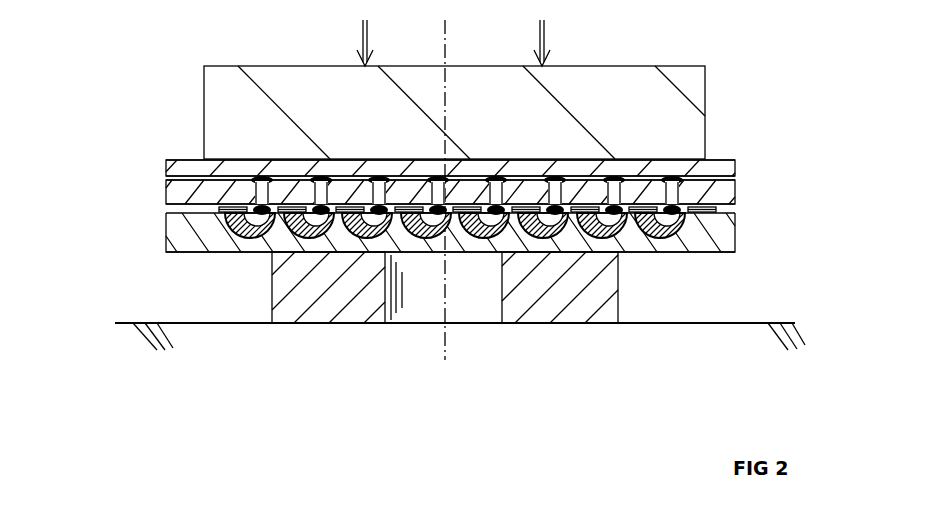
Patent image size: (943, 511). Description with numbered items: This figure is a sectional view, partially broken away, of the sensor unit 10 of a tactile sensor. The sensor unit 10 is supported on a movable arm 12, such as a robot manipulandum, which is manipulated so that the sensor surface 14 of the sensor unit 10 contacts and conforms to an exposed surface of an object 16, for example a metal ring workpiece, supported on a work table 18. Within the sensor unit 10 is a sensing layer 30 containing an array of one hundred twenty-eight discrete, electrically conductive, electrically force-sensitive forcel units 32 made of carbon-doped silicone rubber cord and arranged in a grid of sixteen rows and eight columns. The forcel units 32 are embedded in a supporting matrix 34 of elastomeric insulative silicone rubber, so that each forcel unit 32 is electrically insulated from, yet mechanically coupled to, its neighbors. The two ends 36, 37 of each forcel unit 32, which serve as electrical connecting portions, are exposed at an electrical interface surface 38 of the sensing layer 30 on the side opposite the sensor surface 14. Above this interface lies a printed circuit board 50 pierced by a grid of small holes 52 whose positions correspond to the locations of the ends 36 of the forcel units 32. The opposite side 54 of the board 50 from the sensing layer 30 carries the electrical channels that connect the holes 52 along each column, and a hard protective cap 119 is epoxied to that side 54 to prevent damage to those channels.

The sensor unit 10 is at (486, 201).
The movable arm 12 is at (204, 82).
The sensor surface 14 is at (178, 255).
The object 16 is at (278, 295).
The work table 18 is at (122, 322).
The sensing layer 30 is at (745, 237).
The forcel units 32 is at (248, 242).
The supporting matrix 34 is at (459, 245).
The end of forcel unit 36 is at (304, 182).
The end of forcel unit 37 is at (284, 178).
The electrical interface surface 38 is at (728, 212).
The printed circuit board 50 is at (738, 188).
The holes 52 is at (358, 184).
The opposite side of board 54 is at (166, 172).
The protective cap 119 is at (166, 160).